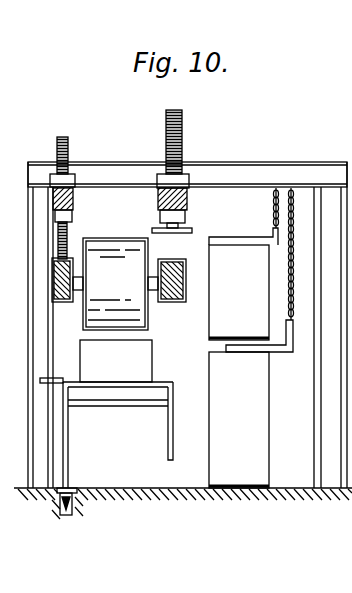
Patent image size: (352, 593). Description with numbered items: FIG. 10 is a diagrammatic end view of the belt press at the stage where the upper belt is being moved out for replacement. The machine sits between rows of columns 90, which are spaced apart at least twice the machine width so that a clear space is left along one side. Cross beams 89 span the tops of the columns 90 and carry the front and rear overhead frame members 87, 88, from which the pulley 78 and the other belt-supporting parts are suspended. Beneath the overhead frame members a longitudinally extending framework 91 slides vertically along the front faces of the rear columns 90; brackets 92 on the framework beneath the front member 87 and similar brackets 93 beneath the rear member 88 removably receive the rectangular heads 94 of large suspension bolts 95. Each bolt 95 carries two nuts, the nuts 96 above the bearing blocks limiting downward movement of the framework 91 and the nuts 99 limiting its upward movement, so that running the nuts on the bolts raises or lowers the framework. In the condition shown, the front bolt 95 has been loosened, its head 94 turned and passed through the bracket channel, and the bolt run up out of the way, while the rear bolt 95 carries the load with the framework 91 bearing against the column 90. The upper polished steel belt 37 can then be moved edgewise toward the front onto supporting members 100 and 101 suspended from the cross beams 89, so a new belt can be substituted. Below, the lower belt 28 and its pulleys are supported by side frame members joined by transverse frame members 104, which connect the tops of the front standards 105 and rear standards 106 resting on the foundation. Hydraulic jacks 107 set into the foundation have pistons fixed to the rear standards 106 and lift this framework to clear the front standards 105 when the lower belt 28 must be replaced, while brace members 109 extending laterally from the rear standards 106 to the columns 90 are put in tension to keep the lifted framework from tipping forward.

The lower belt 28 is at (241, 428).
The upper polished steel belt 37 is at (245, 297).
The pulley 78 is at (123, 291).
The front overhead frame member 87 is at (74, 206).
The rear overhead frame member 88 is at (188, 205).
The cross beams 89 is at (266, 176).
The columns 90 is at (33, 431).
The framework 91 is at (65, 301).
The brackets 92 is at (52, 263).
The brackets 93 is at (194, 265).
The heads 94 is at (176, 238).
The suspension bolts 95 is at (69, 141).
The nuts 96 is at (76, 182).
The nuts 99 is at (160, 215).
The supporting member 100 is at (273, 229).
The supporting member 101 is at (279, 352).
The frame members 104 is at (130, 386).
The front standards 105 is at (170, 438).
The rear standards 106 is at (68, 440).
The hydraulic jacks 107 is at (58, 519).
The brace members 109 is at (40, 380).